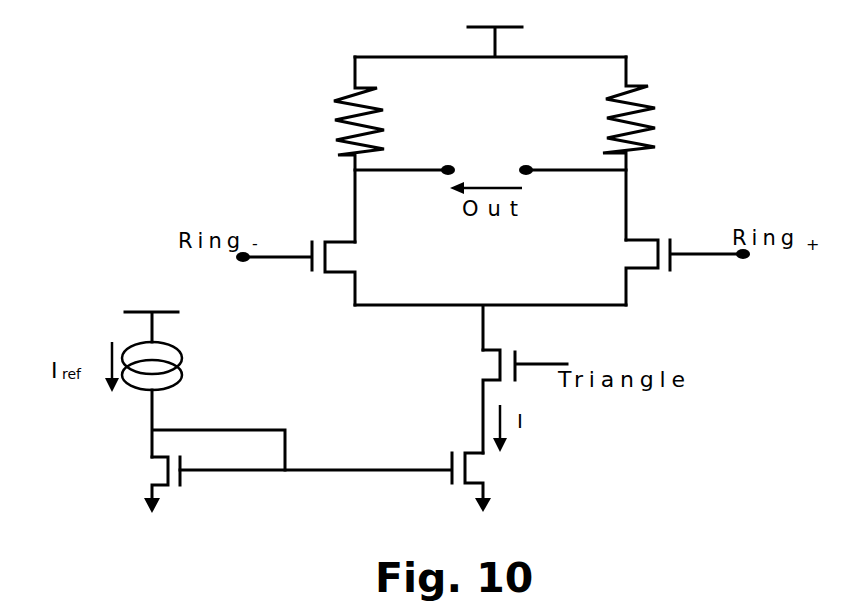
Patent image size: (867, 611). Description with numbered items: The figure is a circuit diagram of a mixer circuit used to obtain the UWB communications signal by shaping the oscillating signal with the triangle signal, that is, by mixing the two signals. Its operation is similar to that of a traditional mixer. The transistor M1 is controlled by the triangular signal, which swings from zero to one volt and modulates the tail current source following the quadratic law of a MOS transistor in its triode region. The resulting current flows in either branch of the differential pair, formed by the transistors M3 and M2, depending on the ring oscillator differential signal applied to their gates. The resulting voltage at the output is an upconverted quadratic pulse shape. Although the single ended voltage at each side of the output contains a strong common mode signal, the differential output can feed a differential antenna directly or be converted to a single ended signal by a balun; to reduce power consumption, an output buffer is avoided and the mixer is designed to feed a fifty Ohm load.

The transistor M1 is at (505, 401).
The differential pair transistor M2 is at (670, 272).
The differential pair transistor M3 is at (309, 273).